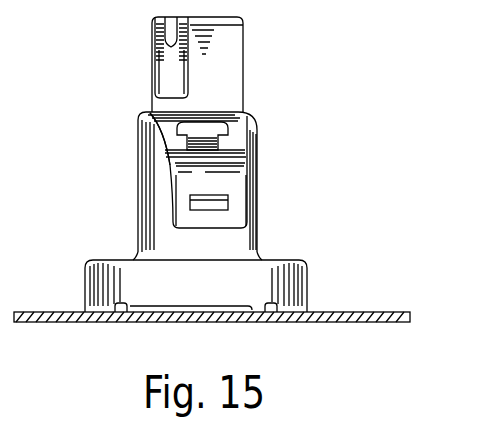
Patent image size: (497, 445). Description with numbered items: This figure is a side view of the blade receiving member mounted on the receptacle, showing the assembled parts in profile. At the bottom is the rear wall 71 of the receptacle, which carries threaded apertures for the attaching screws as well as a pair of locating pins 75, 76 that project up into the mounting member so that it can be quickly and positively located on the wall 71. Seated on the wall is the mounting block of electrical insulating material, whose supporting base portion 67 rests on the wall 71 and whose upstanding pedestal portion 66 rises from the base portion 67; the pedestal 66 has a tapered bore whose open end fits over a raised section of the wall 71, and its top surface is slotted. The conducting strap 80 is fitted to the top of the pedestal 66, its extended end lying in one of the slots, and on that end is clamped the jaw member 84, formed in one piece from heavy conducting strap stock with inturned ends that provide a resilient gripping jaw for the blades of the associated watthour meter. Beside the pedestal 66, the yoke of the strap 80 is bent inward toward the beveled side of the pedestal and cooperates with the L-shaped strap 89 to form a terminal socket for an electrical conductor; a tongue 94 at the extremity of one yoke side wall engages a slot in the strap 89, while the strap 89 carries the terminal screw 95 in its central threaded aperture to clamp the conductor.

The jaw member 84 is at (243, 60).
The terminal screw 95 is at (205, 125).
The pedestal portion 66 is at (255, 158).
The L-shaped strap 89 is at (238, 190).
The conducting strap 80 is at (130, 114).
The tongue 94 is at (202, 203).
The base portion 67 is at (308, 297).
The rear wall 71 is at (362, 313).
The locating pin 75 is at (110, 312).
The locating pin 76 is at (273, 313).